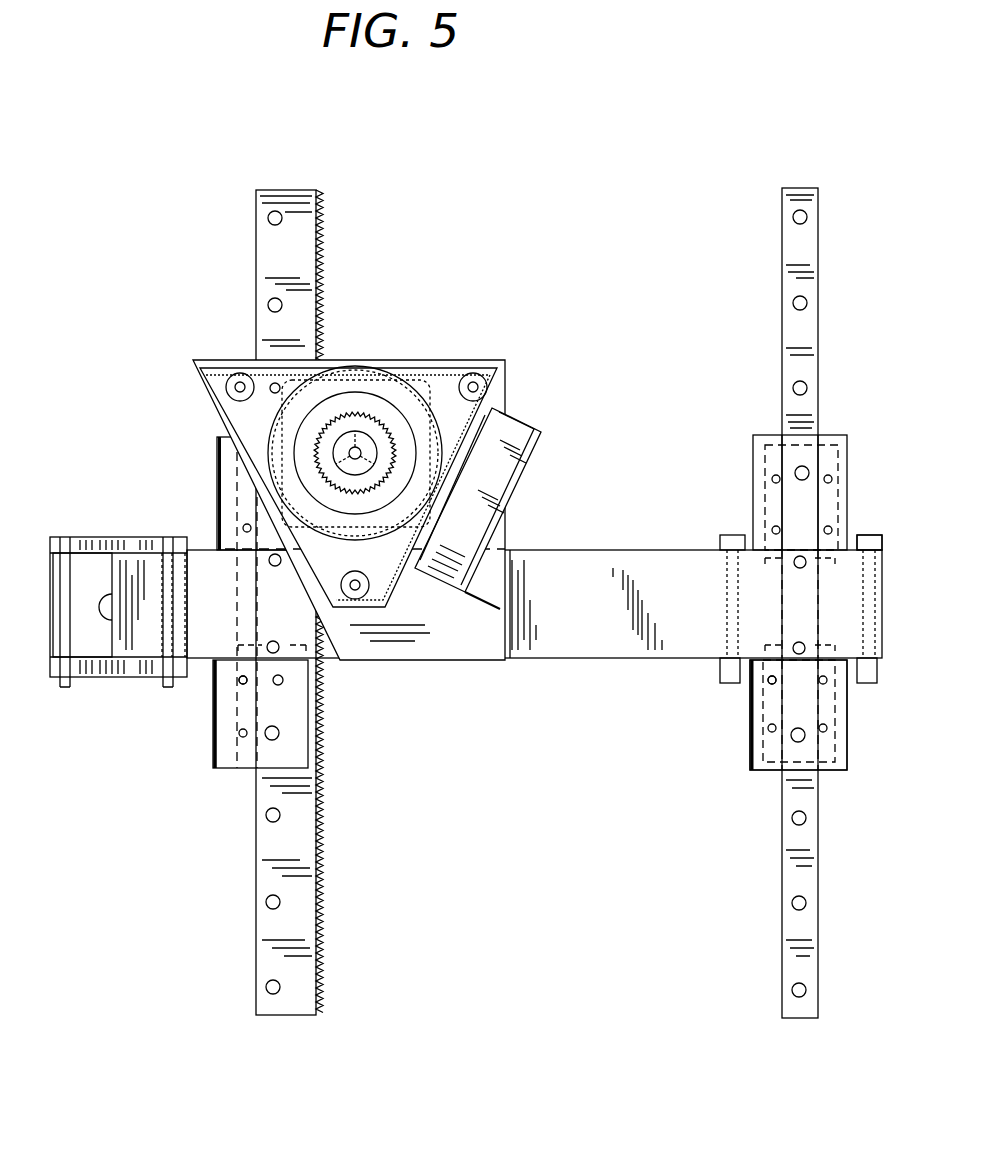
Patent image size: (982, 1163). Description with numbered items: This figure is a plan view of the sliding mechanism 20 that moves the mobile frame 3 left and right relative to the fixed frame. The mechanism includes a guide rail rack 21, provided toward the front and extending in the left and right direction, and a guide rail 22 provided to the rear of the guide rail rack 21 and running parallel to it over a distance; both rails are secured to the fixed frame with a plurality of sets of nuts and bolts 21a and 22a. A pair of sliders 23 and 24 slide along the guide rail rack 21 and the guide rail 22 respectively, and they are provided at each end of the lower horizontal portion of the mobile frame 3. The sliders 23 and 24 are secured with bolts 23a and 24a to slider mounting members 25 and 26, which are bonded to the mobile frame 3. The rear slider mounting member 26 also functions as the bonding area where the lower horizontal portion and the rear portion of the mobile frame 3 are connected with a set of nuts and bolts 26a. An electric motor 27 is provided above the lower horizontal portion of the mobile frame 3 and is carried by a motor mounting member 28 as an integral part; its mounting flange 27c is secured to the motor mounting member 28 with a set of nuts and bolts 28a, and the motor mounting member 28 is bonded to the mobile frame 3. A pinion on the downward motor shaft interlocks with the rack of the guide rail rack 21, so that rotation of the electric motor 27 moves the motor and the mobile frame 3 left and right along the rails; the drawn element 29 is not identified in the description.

The sliding mechanism 20 is at (533, 115).
The mobile frame 3 is at (600, 558).
The guide rail rack 21 is at (302, 848).
The nuts and bolts 21a is at (265, 903).
The guide rail 22 is at (780, 864).
The nuts and bolts 22a is at (806, 903).
The slider 23 is at (237, 495).
The bolts 23a is at (237, 680).
The slider 24 is at (838, 473).
The bolts 24a is at (763, 683).
The slider mounting member 25 is at (213, 718).
The slider mounting member 26 is at (848, 733).
The nuts and bolts 26a is at (867, 535).
The electric motor 27 is at (405, 385).
The mounting flange 27c is at (442, 375).
The motor mounting member 28 is at (445, 645).
The nuts and bolts 28a is at (487, 387).
The motor mount 29 is at (515, 470).